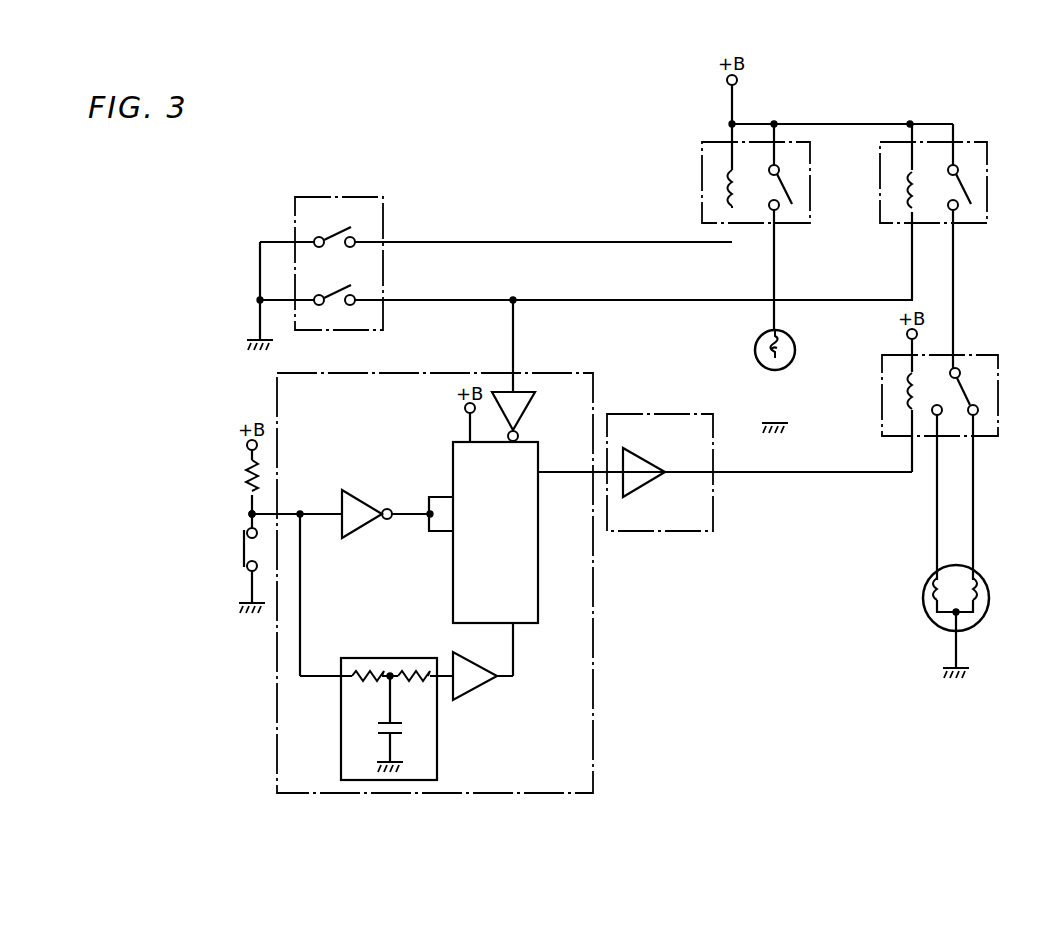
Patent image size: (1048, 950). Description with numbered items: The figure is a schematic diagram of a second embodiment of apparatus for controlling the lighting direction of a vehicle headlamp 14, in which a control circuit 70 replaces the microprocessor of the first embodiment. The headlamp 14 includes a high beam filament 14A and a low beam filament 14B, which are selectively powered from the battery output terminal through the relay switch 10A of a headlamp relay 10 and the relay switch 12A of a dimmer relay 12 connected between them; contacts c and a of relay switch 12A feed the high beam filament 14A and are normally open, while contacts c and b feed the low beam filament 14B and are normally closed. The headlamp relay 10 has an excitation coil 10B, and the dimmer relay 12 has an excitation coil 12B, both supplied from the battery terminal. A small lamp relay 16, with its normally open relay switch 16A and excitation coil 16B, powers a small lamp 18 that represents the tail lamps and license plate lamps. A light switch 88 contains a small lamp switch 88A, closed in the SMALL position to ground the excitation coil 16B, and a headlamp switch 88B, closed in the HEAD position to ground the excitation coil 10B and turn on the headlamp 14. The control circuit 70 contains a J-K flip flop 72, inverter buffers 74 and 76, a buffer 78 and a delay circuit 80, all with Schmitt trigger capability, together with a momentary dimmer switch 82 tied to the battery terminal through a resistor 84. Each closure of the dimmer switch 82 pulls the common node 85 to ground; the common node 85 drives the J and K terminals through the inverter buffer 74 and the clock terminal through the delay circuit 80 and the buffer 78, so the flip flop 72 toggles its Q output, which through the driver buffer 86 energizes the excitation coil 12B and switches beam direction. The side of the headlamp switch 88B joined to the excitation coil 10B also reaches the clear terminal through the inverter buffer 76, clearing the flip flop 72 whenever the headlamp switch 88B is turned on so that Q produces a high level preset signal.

The headlamp relay 10 is at (953, 136).
The relay switch 10A is at (972, 181).
The excitation coil 10B is at (898, 186).
The dimmer relay 12 is at (958, 355).
The relay switch 12A is at (979, 392).
The excitation coil 12B is at (908, 392).
The headlamp 14 is at (920, 608).
The high beam filament 14A is at (927, 599).
The low beam filament 14B is at (978, 599).
The small lamp relay 16 is at (720, 142).
The relay switch 16A is at (794, 193).
The excitation coil 16B is at (715, 193).
The small lamp 18 is at (752, 348).
The control circuit 70 is at (537, 373).
The J-K flip flop 72 is at (453, 598).
The inverter buffer 74 is at (360, 497).
The inverter buffer 76 is at (525, 415).
The buffer 78 is at (476, 690).
The delay circuit 80 is at (438, 745).
The momentary dimmer switch 82 is at (242, 551).
The resistor 84 is at (245, 480).
The common node 85 is at (247, 514).
The buffer 86 is at (669, 414).
The light switch 88 is at (335, 197).
The small lamp switch 88A is at (356, 235).
The headlamp switch 88B is at (356, 294).